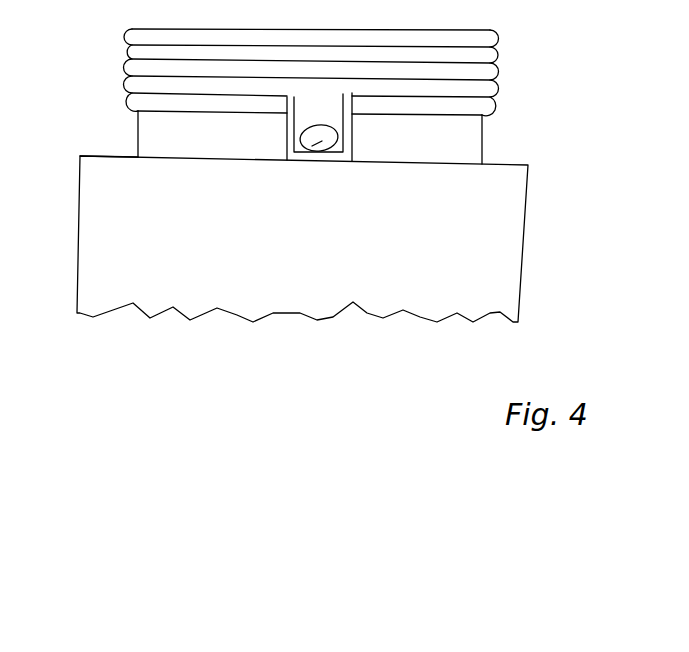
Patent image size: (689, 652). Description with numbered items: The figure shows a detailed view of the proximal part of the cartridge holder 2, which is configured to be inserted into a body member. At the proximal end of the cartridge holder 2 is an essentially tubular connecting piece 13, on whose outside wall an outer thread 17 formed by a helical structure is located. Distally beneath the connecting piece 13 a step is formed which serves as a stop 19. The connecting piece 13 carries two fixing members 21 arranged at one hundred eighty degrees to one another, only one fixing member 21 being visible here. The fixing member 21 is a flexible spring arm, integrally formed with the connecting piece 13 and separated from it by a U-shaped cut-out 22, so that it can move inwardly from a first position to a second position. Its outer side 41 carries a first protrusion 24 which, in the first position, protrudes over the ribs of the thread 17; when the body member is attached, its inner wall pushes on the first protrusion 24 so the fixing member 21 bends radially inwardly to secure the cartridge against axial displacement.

The cartridge holder 2 is at (522, 231).
The connecting piece 13 is at (483, 115).
The outer thread 17 is at (500, 30).
The stop 19 is at (100, 157).
The fixing member 21 is at (340, 116).
The U-shaped cut-out 22 is at (283, 133).
The first protrusion 24 is at (322, 142).
The outer side 41 is at (342, 152).